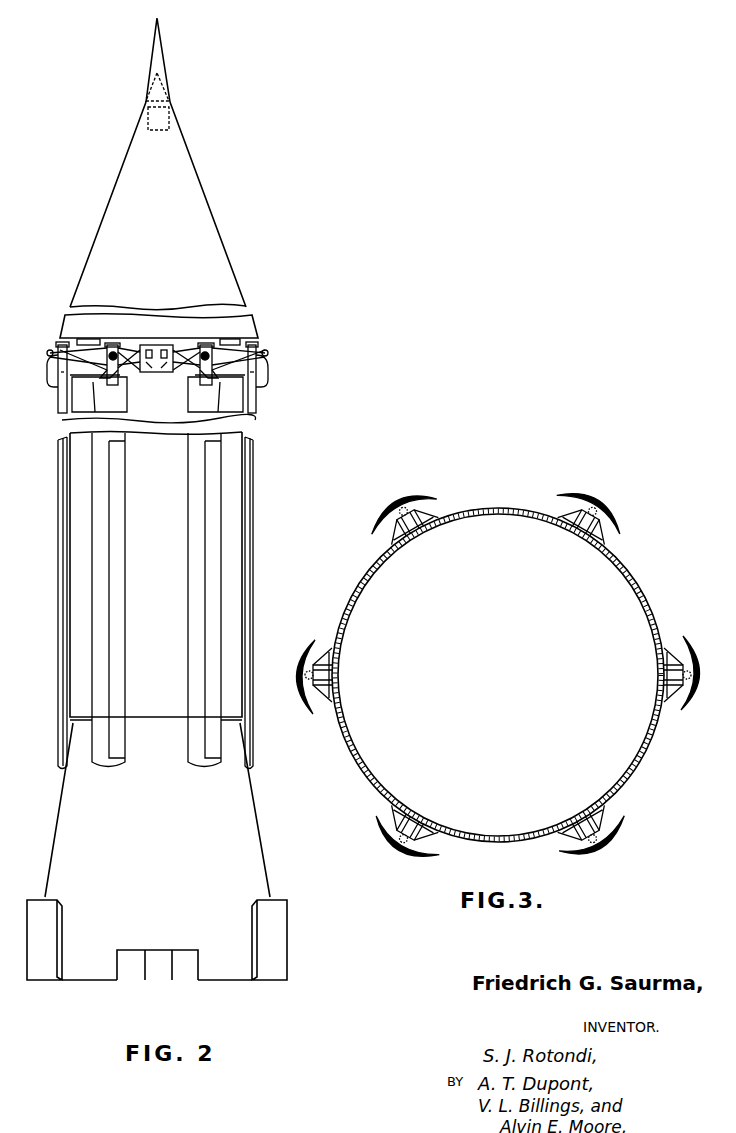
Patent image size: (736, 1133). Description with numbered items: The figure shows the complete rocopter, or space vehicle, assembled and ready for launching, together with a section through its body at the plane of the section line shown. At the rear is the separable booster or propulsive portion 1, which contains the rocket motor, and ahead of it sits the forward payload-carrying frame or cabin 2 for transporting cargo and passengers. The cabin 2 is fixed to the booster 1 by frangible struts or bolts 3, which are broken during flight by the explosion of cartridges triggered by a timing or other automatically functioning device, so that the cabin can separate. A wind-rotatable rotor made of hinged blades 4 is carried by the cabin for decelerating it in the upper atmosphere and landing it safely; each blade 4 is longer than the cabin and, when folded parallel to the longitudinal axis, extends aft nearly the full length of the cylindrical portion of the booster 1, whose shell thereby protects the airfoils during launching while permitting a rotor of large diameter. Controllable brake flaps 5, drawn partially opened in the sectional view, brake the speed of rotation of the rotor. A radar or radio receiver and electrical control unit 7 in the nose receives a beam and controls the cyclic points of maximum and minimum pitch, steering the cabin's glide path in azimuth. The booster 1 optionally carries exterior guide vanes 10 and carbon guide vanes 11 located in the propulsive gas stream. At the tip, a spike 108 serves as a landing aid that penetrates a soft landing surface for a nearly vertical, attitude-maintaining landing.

The booster or propulsive portion 1 is at (157, 706).
The payload-carrying frame or cabin 2 is at (158, 206).
The frangible struts or bolts 3 is at (258, 338).
The hinged blades 4 is at (57, 588).
The controllable brake flaps 5 is at (118, 452).
The radar or radio receiver and electrical control unit 7 is at (157, 101).
The exterior guide vanes 10 is at (287, 930).
The carbon guide vanes 11 is at (122, 977).
The spike 108 is at (161, 49).